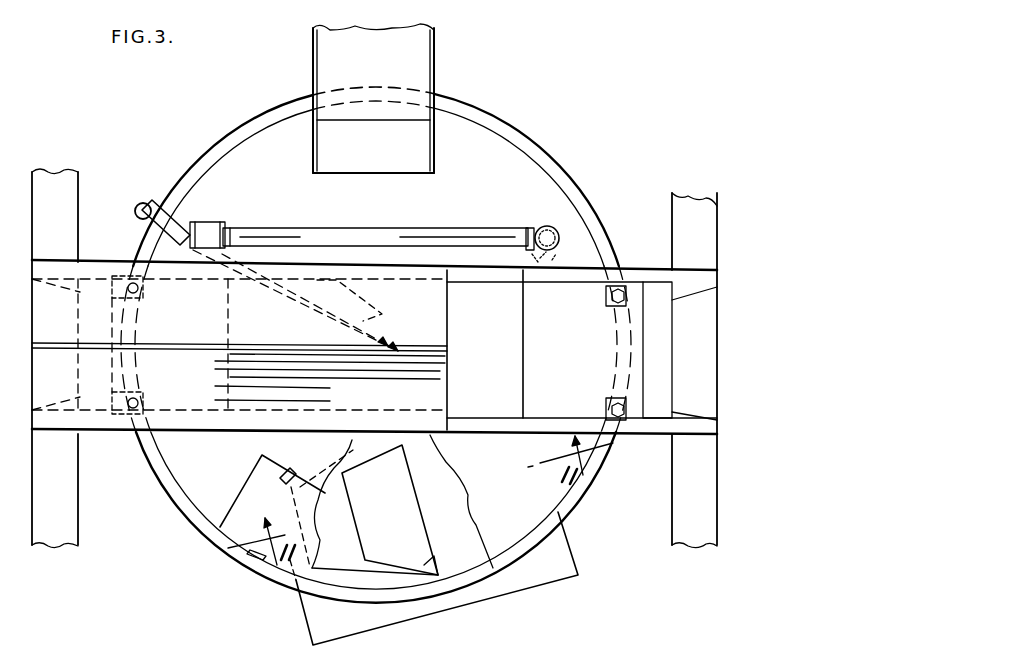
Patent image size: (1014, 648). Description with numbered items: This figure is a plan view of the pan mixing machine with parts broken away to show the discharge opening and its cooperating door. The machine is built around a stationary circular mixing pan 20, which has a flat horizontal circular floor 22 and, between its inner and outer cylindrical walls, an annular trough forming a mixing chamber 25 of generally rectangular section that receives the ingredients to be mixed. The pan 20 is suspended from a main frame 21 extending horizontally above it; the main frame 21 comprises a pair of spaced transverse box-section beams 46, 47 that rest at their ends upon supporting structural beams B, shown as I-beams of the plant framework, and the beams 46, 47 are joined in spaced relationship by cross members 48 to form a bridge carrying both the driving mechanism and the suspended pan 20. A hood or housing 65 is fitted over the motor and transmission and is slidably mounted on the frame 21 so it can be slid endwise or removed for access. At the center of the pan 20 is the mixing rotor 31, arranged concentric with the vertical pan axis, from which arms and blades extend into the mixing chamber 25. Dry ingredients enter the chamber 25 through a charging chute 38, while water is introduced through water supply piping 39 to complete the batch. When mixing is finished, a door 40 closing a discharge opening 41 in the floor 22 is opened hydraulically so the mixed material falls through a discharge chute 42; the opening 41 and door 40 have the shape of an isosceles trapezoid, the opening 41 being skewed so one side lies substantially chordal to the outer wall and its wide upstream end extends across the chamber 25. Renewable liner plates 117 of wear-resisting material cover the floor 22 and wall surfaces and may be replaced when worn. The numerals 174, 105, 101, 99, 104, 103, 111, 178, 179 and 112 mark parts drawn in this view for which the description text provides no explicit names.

The mixing pan 20 is at (579, 183).
The rim of drum 174 is at (206, 162).
The mixing chamber 25 is at (472, 566).
The main frame 21 is at (608, 268).
The charging chute 38 is at (433, 80).
The transverse beams B is at (66, 496).
The hood or housing 65 is at (302, 264).
The mixing rotor 31 is at (442, 441).
The rail and guide 105 is at (239, 340).
The hydraulic lines 101 is at (262, 250).
The hydraulic cylinder 99 is at (381, 232).
The elbow fitting 104 is at (150, 203).
The water supply piping 39 is at (537, 225).
The pin 103 is at (562, 261).
The transverse beam 47 is at (640, 272).
The center block 111 is at (498, 440).
The cross members 48 is at (662, 326).
The transverse beam 46 is at (660, 436).
The bolts 178 is at (139, 294).
The mounting plates 179 is at (118, 276).
The plate 112 is at (238, 490).
The discharge chute 42 is at (570, 564).
The discharge door 40 is at (408, 510).
The discharge opening 41 is at (430, 556).
The renewable liner plates 117 is at (466, 522).
The floor 22 is at (478, 556).